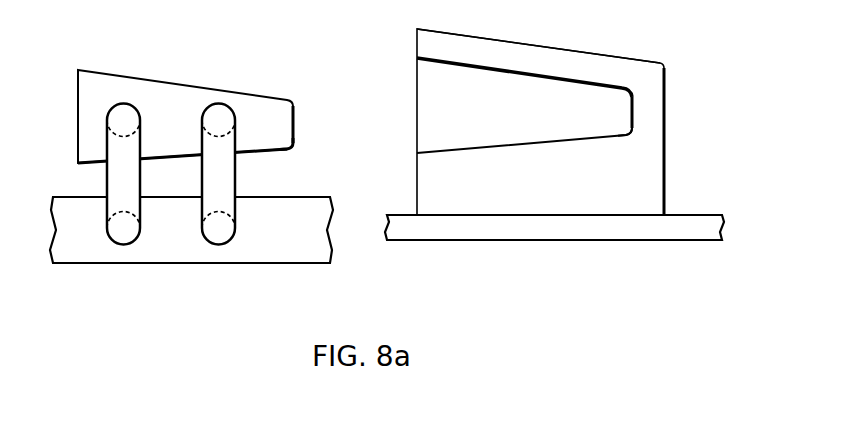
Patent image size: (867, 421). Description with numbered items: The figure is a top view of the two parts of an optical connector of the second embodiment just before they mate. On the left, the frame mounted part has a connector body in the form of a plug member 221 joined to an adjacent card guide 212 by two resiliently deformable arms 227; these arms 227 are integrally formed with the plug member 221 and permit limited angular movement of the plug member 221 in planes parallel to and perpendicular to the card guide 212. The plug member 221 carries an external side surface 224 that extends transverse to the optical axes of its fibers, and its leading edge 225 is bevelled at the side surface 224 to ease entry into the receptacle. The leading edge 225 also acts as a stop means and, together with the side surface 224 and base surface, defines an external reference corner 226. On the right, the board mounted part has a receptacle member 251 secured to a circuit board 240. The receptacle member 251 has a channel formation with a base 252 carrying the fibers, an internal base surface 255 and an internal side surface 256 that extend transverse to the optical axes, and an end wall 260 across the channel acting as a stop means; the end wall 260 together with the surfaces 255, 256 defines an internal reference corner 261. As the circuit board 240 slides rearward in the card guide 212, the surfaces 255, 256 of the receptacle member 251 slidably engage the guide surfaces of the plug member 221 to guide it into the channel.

The card guide 212 is at (181, 252).
The plug member 221 is at (178, 92).
The external side surface 224 is at (262, 150).
The leading edge 225 is at (293, 122).
The external reference corner 226 is at (292, 147).
The resiliently deformable arms 227 is at (123, 113).
The circuit board 240 is at (482, 232).
The receptacle member 251 is at (650, 163).
The base 252 is at (515, 88).
The internal base surface 255 is at (435, 90).
The internal side surface 256 is at (442, 152).
The end wall 260 is at (633, 108).
The internal reference corner 261 is at (628, 130).